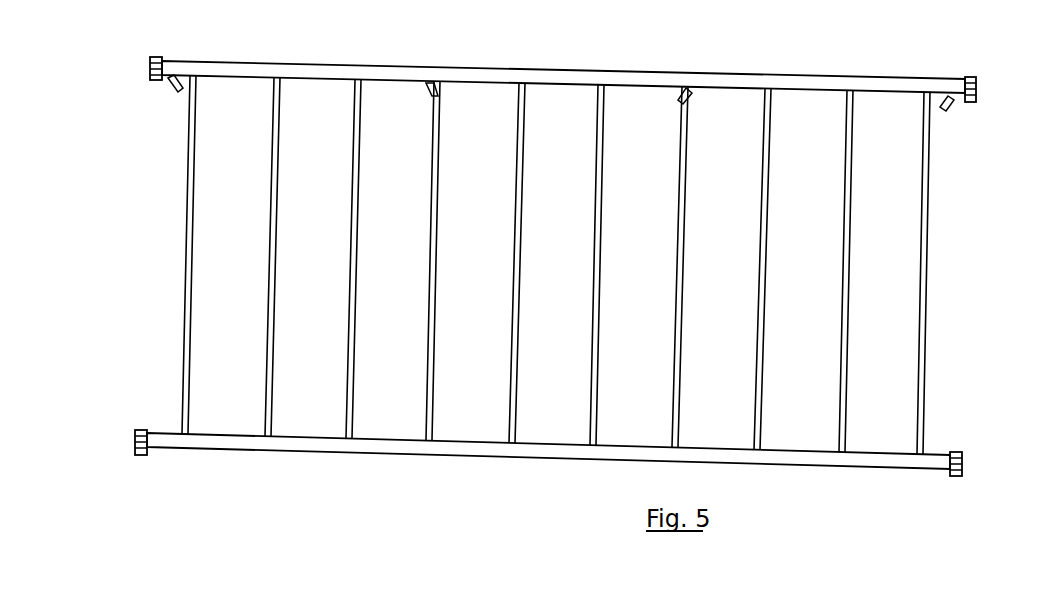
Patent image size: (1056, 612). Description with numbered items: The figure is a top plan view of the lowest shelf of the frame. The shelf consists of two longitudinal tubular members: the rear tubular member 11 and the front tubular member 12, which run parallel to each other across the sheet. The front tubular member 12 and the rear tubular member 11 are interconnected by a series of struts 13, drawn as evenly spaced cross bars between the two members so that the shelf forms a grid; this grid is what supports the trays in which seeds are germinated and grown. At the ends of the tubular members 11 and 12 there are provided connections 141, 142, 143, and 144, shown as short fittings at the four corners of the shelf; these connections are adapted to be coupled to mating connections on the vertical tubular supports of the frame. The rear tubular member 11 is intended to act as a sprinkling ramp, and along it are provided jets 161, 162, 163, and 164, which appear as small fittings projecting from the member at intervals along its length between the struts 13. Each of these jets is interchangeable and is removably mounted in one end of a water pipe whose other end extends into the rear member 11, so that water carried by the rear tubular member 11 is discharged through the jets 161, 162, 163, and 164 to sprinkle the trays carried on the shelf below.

The rear tubular member 11 is at (557, 71).
The front tubular member 12 is at (467, 459).
The struts 13 is at (929, 291).
The connection 141 is at (151, 84).
The connection 142 is at (975, 108).
The connection 143 is at (142, 426).
The connection 144 is at (954, 451).
The jet 161 is at (180, 92).
The jet 162 is at (437, 97).
The jet 163 is at (679, 103).
The jet 164 is at (942, 110).